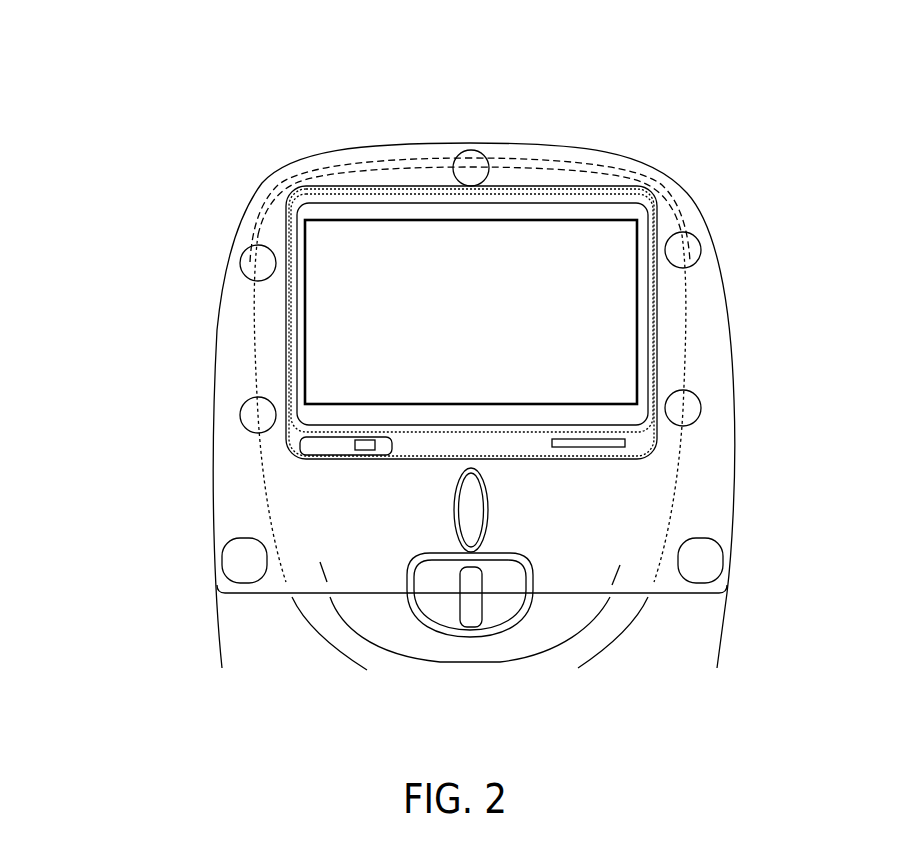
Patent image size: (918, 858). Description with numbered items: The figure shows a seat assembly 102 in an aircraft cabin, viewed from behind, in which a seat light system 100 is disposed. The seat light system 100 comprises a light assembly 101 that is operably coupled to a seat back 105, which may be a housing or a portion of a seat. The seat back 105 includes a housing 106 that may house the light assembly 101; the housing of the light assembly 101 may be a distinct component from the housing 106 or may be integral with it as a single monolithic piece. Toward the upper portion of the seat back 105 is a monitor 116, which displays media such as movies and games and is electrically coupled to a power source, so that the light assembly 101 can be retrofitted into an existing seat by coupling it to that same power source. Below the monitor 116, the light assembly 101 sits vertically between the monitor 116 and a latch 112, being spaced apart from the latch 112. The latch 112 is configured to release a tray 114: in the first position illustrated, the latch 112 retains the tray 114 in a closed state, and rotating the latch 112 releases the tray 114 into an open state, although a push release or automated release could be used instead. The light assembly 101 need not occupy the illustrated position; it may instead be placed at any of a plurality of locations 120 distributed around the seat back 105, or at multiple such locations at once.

The seat light system 100 is at (150, 97).
The seat assembly 102 is at (158, 167).
The light assembly 101 is at (396, 527).
The seat back 105 is at (237, 468).
The housing 106 is at (372, 505).
The latch 112 is at (470, 600).
The tray 114 is at (292, 655).
The monitor 116 is at (491, 331).
The plurality of locations 120 is at (470, 170).